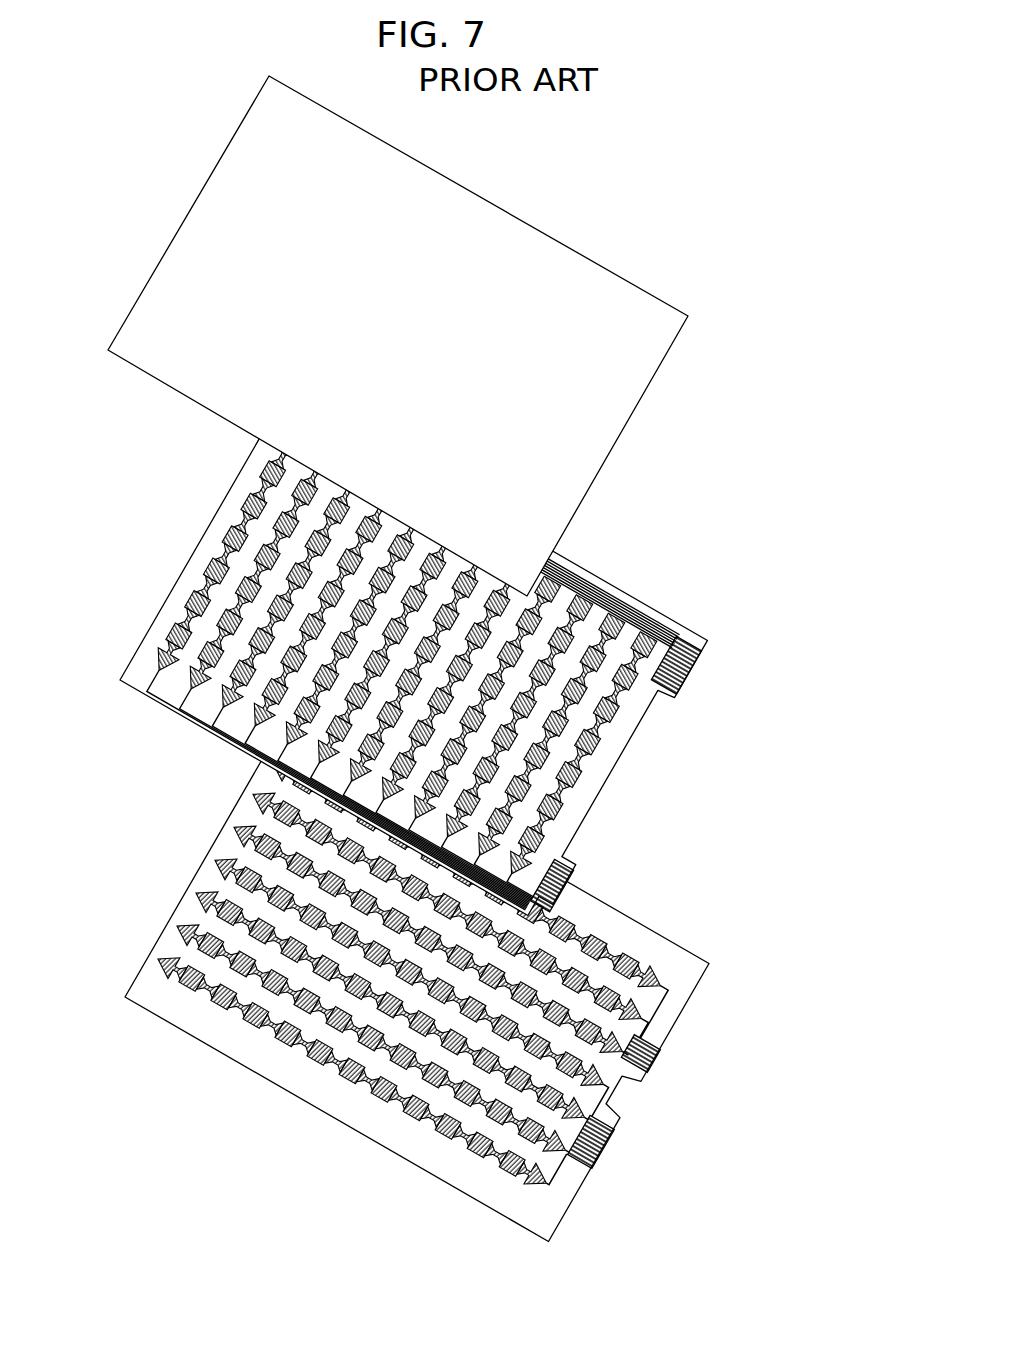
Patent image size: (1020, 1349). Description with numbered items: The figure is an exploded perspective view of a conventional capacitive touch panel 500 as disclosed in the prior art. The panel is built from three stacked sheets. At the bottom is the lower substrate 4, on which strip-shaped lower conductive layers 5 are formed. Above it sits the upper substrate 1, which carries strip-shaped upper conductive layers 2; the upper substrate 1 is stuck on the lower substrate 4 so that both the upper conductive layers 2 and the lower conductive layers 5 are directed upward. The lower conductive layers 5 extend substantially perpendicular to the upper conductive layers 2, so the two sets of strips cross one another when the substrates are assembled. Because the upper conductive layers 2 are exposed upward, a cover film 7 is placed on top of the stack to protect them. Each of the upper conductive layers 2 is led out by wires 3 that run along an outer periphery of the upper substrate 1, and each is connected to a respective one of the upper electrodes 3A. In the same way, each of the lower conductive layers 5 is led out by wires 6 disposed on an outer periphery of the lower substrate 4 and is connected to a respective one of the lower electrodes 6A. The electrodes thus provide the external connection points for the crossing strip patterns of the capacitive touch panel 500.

The capacitive touch panel 500 is at (636, 160).
The cover film 7 is at (526, 220).
The upper substrate 1 is at (594, 793).
The upper conductive layers 2 is at (246, 583).
The wires 3 is at (633, 596).
The upper electrodes 3A is at (665, 665).
The lower substrate 4 is at (318, 1106).
The lower conductive layers 5 is at (297, 1003).
The wires 6 is at (640, 1026).
The lower electrodes 6A is at (652, 1063).